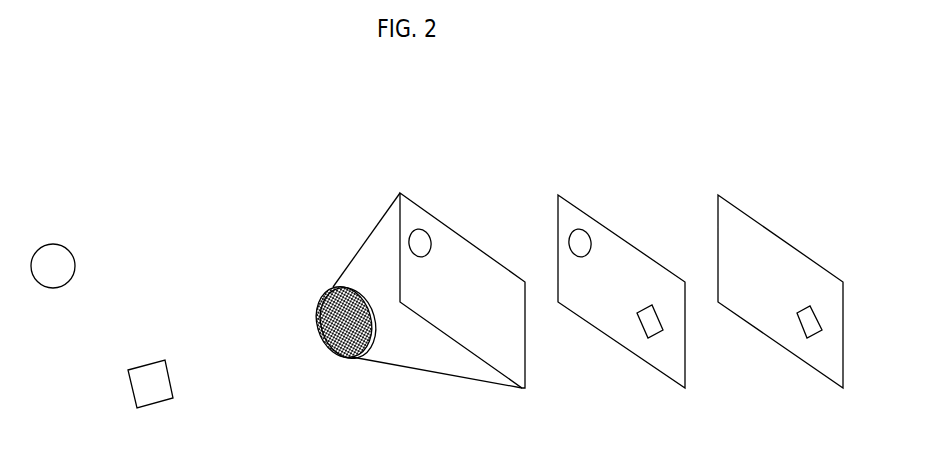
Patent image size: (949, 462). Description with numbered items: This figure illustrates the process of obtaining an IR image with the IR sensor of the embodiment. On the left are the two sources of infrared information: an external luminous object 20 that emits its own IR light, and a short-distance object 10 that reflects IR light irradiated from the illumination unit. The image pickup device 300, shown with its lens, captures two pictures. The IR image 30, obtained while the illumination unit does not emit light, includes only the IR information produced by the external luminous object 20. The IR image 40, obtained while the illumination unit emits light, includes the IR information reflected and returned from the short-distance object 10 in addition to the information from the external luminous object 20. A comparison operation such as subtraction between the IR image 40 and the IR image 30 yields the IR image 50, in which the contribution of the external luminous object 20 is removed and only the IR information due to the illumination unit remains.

The short-distance object 10 is at (128, 390).
The external luminous object 20 is at (62, 244).
The IR image 30 is at (525, 373).
The image pickup device 300 is at (347, 358).
The IR image 40 is at (672, 380).
The IR image 50 is at (822, 377).